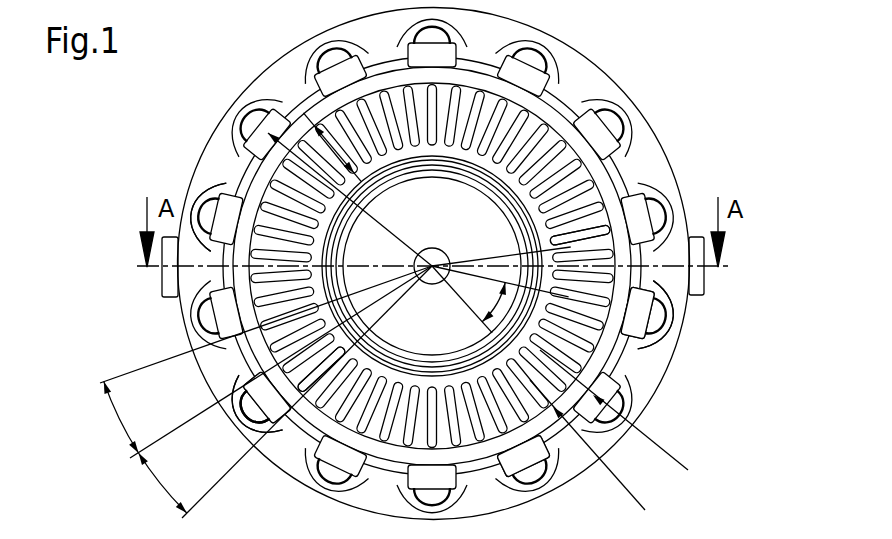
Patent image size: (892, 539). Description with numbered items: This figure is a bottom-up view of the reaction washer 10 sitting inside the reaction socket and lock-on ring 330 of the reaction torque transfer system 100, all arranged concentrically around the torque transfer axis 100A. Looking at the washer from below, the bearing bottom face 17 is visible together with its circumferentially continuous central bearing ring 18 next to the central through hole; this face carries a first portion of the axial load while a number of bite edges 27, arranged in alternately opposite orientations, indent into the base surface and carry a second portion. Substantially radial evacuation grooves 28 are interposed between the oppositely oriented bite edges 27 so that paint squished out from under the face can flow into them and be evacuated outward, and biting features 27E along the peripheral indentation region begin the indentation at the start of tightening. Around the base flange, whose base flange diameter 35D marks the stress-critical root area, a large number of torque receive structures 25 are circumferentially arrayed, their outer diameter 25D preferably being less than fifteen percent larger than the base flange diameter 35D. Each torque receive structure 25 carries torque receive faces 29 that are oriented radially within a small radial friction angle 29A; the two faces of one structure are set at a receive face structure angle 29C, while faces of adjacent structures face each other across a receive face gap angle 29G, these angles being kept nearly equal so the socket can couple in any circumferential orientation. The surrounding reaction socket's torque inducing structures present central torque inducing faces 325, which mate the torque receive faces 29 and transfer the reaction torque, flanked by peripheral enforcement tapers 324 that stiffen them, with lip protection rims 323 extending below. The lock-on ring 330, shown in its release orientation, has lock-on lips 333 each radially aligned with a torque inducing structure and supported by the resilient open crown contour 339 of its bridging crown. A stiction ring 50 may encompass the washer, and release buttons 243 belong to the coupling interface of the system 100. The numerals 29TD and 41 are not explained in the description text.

The reaction washer 10 is at (123, 337).
The bearing bottom face 17 is at (582, 187).
The central bearing ring 18 is at (530, 203).
The torque receive structures 25 is at (257, 400).
The bite edges 27 is at (600, 235).
The biting features 27E is at (352, 170).
The evacuation grooves 28 is at (593, 230).
The torque receive faces 29 is at (283, 427).
The radial friction angle 29A is at (496, 300).
The receive face structure angle 29C is at (284, 392).
The receive face gap angle 29G is at (266, 362).
The tooth direction 29TD is at (352, 189).
The insulator 41 is at (273, 397).
The stiction ring 50 is at (548, 423).
The reaction torque transfer system 100 is at (712, 95).
The torque transfer axis 100A is at (432, 266).
The release buttons 243 is at (162, 280).
The lip protection rims 323 is at (245, 355).
The peripheral enforcement tapers 324 is at (660, 332).
The central torque inducing faces 325 is at (637, 347).
The lock-on ring 330 is at (297, 60).
The lock-on lips 333 is at (295, 433).
The open crown contour 339 is at (663, 323).
The outer diameter 25D is at (617, 410).
The base flange diameter 35D is at (594, 445).